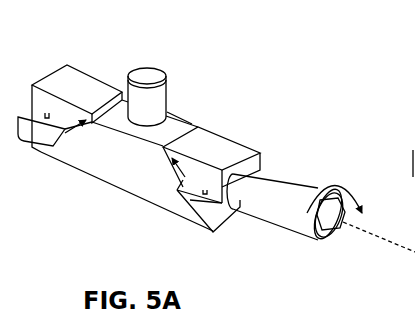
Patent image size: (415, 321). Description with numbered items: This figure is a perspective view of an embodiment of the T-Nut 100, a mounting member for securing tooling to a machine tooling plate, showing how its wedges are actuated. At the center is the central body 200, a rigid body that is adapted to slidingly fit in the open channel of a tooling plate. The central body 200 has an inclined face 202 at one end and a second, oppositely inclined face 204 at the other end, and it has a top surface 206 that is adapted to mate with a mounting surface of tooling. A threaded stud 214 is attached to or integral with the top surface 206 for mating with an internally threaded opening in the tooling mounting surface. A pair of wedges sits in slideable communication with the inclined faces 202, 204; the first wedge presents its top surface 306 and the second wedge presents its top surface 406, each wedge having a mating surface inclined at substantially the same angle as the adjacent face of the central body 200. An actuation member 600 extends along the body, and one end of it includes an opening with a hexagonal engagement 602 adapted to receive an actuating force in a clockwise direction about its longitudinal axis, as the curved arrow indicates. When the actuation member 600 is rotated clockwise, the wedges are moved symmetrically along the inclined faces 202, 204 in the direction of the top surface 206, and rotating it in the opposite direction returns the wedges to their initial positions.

The T-Nut 100 is at (306, 75).
The central body 200 is at (122, 165).
The inclined face 202 is at (163, 158).
The second oppositely inclined face 204 is at (83, 122).
The top surface 206 is at (173, 122).
The threaded stud 214 is at (160, 88).
The wedge top surface 306 is at (217, 147).
The wedge top surface 406 is at (97, 90).
The actuation member 600 is at (277, 185).
The hexagonal engagement 602 is at (330, 232).